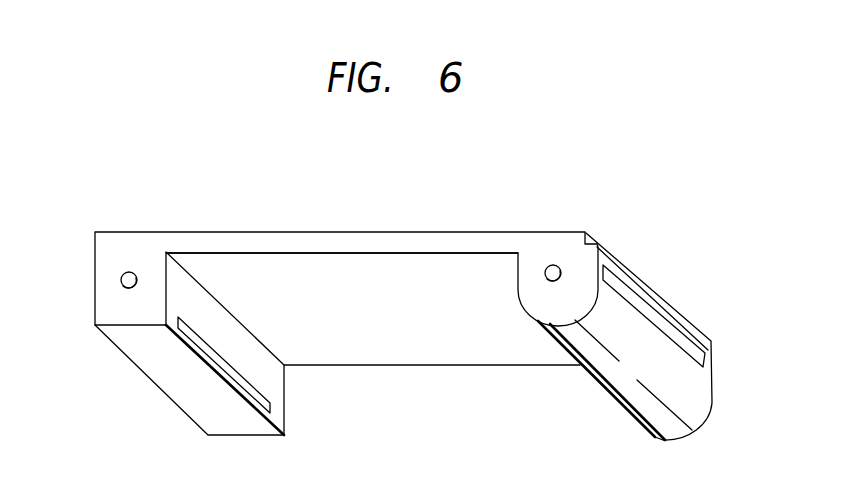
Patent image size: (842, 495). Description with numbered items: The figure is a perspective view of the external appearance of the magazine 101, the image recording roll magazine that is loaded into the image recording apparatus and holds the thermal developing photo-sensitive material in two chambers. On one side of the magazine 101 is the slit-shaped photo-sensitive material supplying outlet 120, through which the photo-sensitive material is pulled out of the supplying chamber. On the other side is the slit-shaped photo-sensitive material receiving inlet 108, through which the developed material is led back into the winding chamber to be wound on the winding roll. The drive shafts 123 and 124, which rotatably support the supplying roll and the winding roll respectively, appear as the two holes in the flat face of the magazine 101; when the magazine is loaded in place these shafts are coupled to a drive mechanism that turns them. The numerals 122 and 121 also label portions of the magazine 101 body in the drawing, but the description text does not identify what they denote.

The magazine 101 is at (384, 228).
The plate portion 122 is at (330, 239).
The drive shaft 123 is at (129, 271).
The drive shaft 124 is at (553, 264).
The photo-sensitive material supplying outlet 120 is at (271, 407).
The channel portion 121 is at (592, 362).
The photo-sensitive material receiving inlet 108 is at (665, 328).